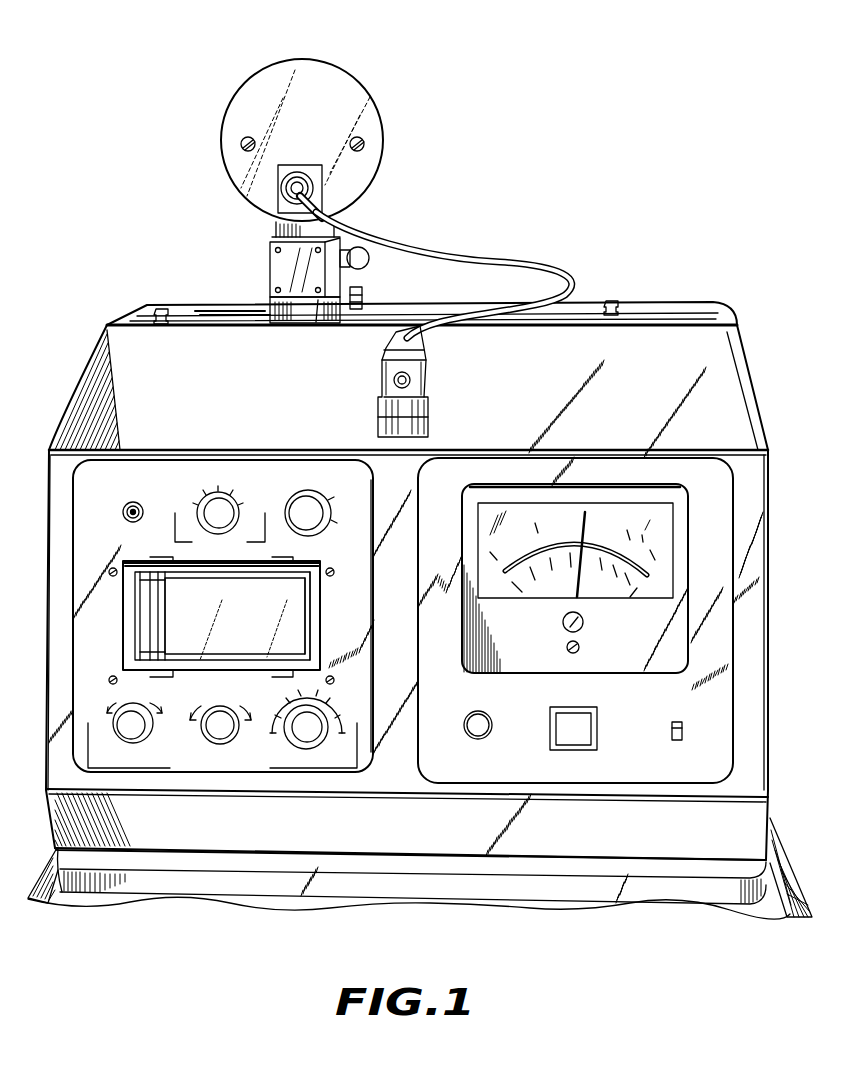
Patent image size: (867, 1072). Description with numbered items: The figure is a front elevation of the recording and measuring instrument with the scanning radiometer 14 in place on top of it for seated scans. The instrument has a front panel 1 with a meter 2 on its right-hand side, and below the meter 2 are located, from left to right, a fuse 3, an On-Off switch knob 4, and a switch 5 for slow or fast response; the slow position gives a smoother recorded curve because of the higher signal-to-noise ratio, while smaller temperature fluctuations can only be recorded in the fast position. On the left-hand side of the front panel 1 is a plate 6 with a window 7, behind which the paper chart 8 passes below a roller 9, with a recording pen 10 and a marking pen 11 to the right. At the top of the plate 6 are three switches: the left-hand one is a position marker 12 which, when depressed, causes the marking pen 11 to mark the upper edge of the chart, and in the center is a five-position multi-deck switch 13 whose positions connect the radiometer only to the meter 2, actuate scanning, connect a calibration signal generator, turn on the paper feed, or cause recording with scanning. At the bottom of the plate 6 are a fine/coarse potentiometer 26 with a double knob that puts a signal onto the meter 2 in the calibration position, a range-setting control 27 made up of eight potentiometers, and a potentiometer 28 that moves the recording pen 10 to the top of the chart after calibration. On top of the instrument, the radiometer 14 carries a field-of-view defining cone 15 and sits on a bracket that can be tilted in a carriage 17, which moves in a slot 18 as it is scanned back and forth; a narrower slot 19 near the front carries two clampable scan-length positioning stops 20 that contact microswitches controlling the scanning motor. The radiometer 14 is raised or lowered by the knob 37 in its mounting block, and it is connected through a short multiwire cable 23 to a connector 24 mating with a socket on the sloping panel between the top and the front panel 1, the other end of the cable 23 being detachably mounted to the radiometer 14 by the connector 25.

The front panel 1 is at (400, 628).
The meter 2 is at (610, 634).
The fuse 3 is at (489, 716).
The On-Off switch knob 4 is at (314, 497).
The switch for slow or fast response 5 is at (683, 724).
The plate 6 is at (96, 648).
The window 7 is at (310, 565).
The paper chart 8 is at (254, 621).
The roller 9 is at (155, 600).
The recording pen 10 is at (317, 620).
The marking pen 11 is at (320, 569).
The position marker 12 is at (132, 502).
The multi-deck switch 13 is at (232, 497).
The radiometer 14 is at (372, 103).
The field of view defining cone 15 is at (270, 267).
The carriage 17 is at (358, 293).
The slot 18 is at (398, 307).
The narrower slot 19 is at (136, 316).
The scan-length positioning stops 20 is at (162, 305).
The multiwire cable 23 is at (452, 246).
The connector 24 is at (378, 371).
The connector 25 is at (312, 181).
The fine/coarse potentiometer 26 is at (145, 735).
The range-setting control 27 is at (296, 732).
The potentiometer 28 is at (219, 741).
The knob 37 is at (364, 247).